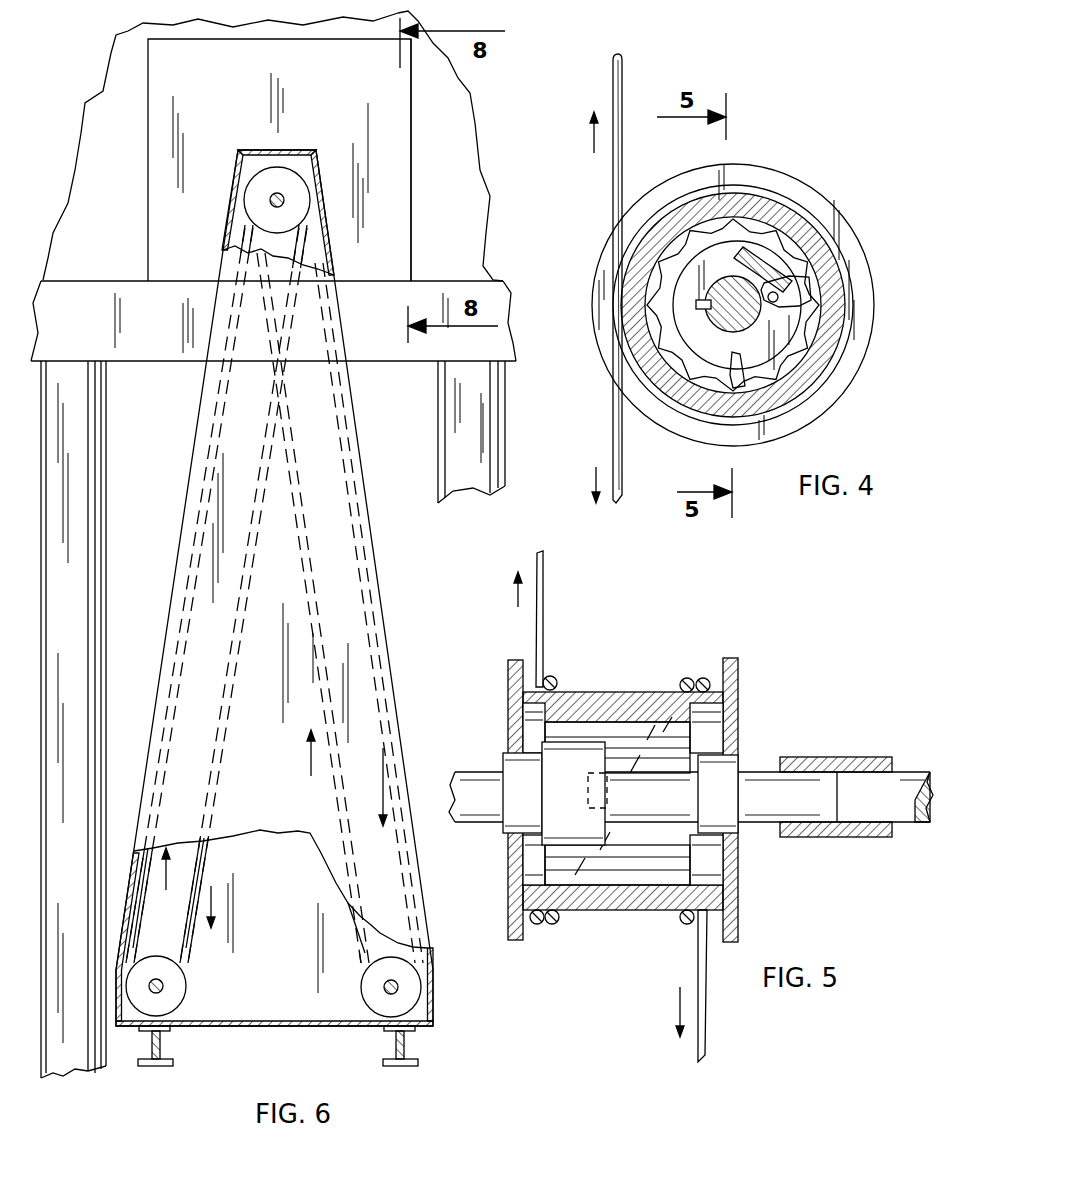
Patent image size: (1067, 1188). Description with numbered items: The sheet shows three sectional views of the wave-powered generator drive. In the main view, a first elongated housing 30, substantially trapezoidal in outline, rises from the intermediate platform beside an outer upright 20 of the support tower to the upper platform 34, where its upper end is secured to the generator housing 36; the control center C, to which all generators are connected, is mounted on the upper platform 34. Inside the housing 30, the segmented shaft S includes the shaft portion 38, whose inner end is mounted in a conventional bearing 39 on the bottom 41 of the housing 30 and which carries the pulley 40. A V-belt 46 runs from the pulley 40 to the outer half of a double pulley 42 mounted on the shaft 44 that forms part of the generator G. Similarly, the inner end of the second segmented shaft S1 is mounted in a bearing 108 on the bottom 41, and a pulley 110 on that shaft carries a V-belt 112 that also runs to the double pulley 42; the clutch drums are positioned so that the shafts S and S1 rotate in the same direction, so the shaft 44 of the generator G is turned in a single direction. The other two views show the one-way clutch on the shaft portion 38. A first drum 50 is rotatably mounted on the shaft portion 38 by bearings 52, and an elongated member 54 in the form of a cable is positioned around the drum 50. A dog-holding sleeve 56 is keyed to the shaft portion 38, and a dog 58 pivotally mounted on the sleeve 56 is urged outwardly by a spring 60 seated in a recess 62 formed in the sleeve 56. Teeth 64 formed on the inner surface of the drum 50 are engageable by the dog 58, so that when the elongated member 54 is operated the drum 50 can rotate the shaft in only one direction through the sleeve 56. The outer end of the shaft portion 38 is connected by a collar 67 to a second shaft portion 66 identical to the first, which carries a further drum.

In FIG. 6, the control center C is at (100, 90).
In FIG. 6, the generator G is at (145, 218).
In FIG. 6, the outer upright 20 is at (103, 500).
In FIG. 6, the first elongated housing 30 is at (390, 574).
In FIG. 6, the upper platform 34 is at (410, 290).
In FIG. 6, the generator housing 36 is at (395, 188).
In FIG. 6, the shaft portion 38 is at (160, 985).
In FIG. 4, the shaft portion 38 is at (730, 288).
In FIG. 5, the shaft portion 38 is at (470, 780).
In FIG. 6, the bearing 39 is at (170, 1028).
In FIG. 6, the pulley 40 is at (183, 996).
In FIG. 6, the bottom 41 is at (240, 1025).
In FIG. 6, the double pulley 42 is at (295, 180).
In FIG. 6, the shaft 44 is at (277, 193).
In FIG. 6, the V-belt 46 is at (207, 862).
In FIG. 4, the first drum 50 is at (820, 182).
In FIG. 5, the first drum 50 is at (500, 936).
In FIG. 5, the bearings 52 is at (505, 765).
In FIG. 4, the elongated member 54 is at (614, 446).
In FIG. 5, the elongated member 54 is at (545, 563).
In FIG. 4, the dog-holding sleeve 56 is at (748, 345).
In FIG. 5, the dog-holding sleeve 56 is at (550, 796).
In FIG. 4, the dog 58 is at (812, 292).
In FIG. 5, the dog 58 is at (610, 798).
In FIG. 4, the spring 60 is at (782, 268).
In FIG. 4, the recess 62 is at (733, 305).
In FIG. 4, the teeth 64 is at (737, 368).
In FIG. 5, the teeth 64 is at (632, 727).
In FIG. 5, the second shaft portion 66 is at (912, 786).
In FIG. 5, the collar 67 is at (862, 757).
In FIG. 6, the bearing 108 is at (375, 1027).
In FIG. 6, the pulley 110 is at (410, 996).
In FIG. 6, the V-belt 112 is at (356, 518).
In FIG. 6, the segmented shaft S is at (153, 976).
In FIG. 6, the segmented shaft S1 is at (388, 978).